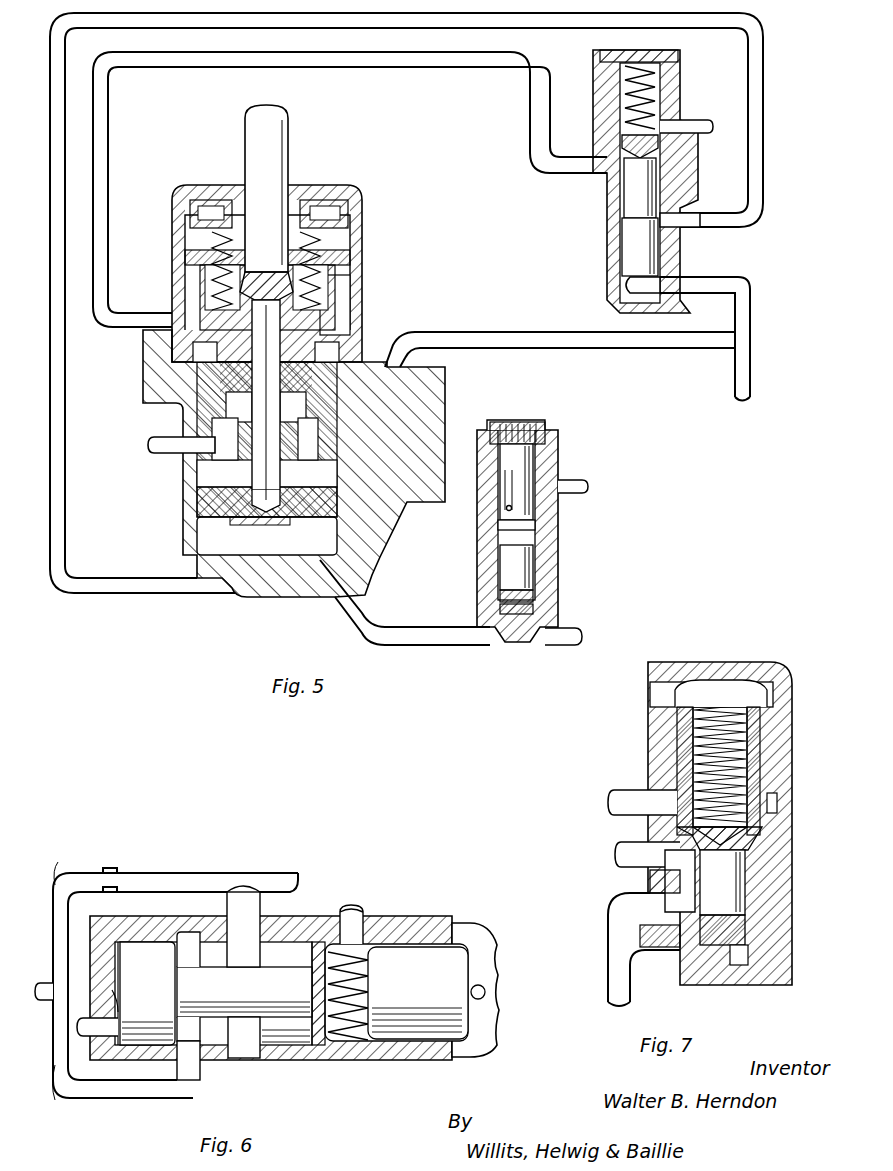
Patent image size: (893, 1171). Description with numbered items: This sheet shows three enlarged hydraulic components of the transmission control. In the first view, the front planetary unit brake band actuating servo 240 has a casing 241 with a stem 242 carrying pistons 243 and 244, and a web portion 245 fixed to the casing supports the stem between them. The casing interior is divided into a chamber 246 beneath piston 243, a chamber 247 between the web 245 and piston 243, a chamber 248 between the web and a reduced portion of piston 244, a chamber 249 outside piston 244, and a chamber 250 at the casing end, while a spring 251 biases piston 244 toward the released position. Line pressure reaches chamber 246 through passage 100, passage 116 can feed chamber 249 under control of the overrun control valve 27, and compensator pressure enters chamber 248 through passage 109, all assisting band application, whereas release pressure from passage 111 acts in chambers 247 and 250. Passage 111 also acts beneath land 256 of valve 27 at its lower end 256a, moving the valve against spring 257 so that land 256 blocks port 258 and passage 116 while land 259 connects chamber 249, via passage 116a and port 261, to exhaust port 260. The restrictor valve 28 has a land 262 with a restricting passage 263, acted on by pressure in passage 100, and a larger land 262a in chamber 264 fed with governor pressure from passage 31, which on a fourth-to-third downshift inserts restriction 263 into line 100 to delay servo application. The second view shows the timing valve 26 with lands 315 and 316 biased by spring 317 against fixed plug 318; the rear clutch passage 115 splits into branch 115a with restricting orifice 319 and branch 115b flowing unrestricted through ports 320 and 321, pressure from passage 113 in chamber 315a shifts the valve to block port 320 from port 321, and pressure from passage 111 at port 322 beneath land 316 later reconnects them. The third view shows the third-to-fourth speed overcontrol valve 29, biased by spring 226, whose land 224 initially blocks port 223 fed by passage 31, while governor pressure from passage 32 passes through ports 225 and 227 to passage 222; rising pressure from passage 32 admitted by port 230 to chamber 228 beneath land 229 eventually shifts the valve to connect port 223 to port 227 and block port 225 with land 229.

In FIG. 5, the passage 116 is at (140, 580).
In FIG. 5, the passage 116a is at (423, 57).
In FIG. 5, the passage 111 is at (742, 370).
In FIG. 6, the passage 111 is at (350, 905).
In FIG. 5, the front planetary unit brake band actuating servo 240 is at (361, 291).
In FIG. 5, the chamber 246 is at (298, 545).
In FIG. 5, the chamber 247 is at (210, 475).
In FIG. 5, the piston 243 is at (200, 493).
In FIG. 5, the chamber 248 is at (222, 432).
In FIG. 5, the passage 109 is at (150, 444).
In FIG. 5, the chamber 249 is at (336, 322).
In FIG. 5, the casing 241 is at (352, 238).
In FIG. 5, the spring 251 is at (222, 225).
In FIG. 5, the chamber 250 is at (338, 223).
In FIG. 5, the piston 244 is at (205, 296).
In FIG. 5, the stem 242 is at (290, 135).
In FIG. 5, the web portion 245 is at (290, 455).
In FIG. 5, the overrun control valve 27 is at (593, 231).
In FIG. 5, the biasing spring 257 is at (655, 70).
In FIG. 5, the exhaust port 260 is at (668, 125).
In FIG. 5, the land 259 is at (625, 142).
In FIG. 5, the port 261 is at (618, 170).
In FIG. 5, the port 258 is at (668, 213).
In FIG. 5, the land 256 is at (630, 255).
In FIG. 5, the port 256a is at (665, 277).
In FIG. 5, the restrictor valve 28 is at (533, 563).
In FIG. 5, the chamber 264 is at (540, 508).
In FIG. 5, the passage 31 is at (572, 485).
In FIG. 7, the passage 31 is at (615, 803).
In FIG. 5, the land 262a is at (512, 533).
In FIG. 5, the land 262 is at (510, 578).
In FIG. 5, the restricting passage 263 is at (535, 598).
In FIG. 5, the passage 100 is at (570, 632).
In FIG. 6, the passage 115 is at (295, 880).
In FIG. 6, the branch passage 115a is at (54, 863).
In FIG. 6, the branch passage 115b is at (52, 1094).
In FIG. 6, the restricting orifice 319 is at (110, 868).
In FIG. 6, the land 315 is at (150, 948).
In FIG. 6, the chamber 315a is at (122, 1045).
In FIG. 6, the passage 113 is at (90, 1038).
In FIG. 6, the land 316 is at (285, 1045).
In FIG. 6, the timing valve 26 is at (307, 1051).
In FIG. 6, the spring 317 is at (365, 975).
In FIG. 6, the fixed plug 318 is at (392, 1043).
In FIG. 6, the port 321 is at (255, 940).
In FIG. 6, the port 320 is at (190, 1047).
In FIG. 6, the port 322 is at (355, 935).
In FIG. 7, the land 224 is at (760, 755).
In FIG. 7, the spring 226 is at (775, 712).
In FIG. 7, the port 223 is at (677, 792).
In FIG. 7, the port 227 is at (680, 838).
In FIG. 7, the passage 222 is at (617, 855).
In FIG. 7, the third to fourth speed overcontrol valve 29 is at (751, 882).
In FIG. 7, the port 225 is at (672, 905).
In FIG. 7, the land 229 is at (745, 935).
In FIG. 7, the chamber 228 is at (752, 950).
In FIG. 7, the passage 32 is at (610, 980).
In FIG. 7, the port 230 is at (672, 962).